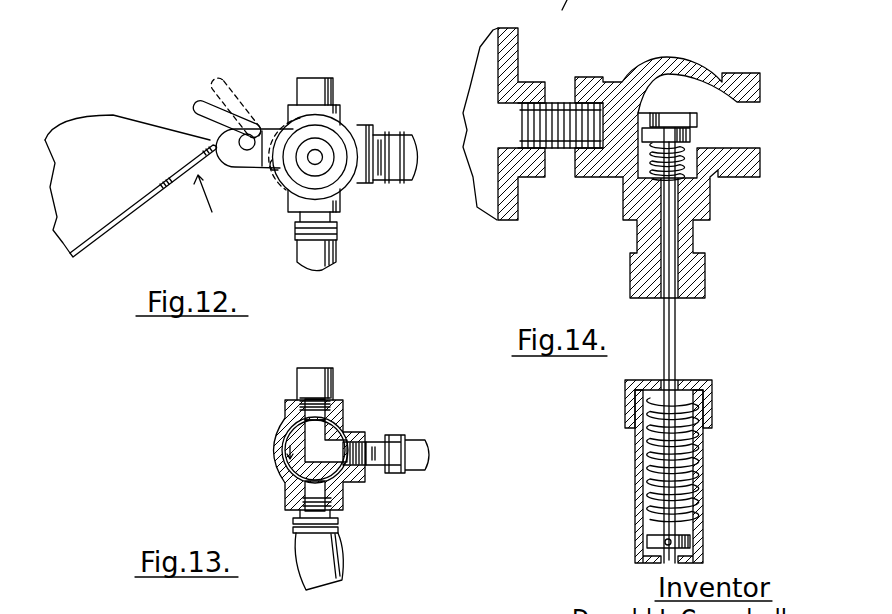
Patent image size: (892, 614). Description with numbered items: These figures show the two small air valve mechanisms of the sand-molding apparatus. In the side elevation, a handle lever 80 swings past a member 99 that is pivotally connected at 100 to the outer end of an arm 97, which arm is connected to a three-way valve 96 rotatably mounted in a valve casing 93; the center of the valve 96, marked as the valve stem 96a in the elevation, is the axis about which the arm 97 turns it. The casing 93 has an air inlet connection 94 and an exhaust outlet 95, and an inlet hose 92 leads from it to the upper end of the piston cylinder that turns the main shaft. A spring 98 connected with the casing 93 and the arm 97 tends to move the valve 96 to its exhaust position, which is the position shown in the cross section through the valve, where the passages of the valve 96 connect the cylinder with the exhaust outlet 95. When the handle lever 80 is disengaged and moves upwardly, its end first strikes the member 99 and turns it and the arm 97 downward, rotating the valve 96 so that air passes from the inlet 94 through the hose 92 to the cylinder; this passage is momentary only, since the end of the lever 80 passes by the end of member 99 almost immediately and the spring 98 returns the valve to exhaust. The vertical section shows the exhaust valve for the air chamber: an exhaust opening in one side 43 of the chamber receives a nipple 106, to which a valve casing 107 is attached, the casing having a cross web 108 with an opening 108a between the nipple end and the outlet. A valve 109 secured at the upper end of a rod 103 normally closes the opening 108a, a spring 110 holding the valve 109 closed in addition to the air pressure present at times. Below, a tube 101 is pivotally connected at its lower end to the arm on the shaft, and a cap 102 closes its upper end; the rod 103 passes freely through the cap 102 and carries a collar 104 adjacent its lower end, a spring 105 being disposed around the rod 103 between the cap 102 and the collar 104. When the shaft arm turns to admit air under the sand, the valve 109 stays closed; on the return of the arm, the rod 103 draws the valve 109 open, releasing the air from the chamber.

In FIG. 14, the upwardly extending sides 43 is at (510, 53).
In FIG. 12, the handle lever 80 is at (144, 183).
In FIG. 12, the inlet hose 92 is at (333, 241).
In FIG. 13, the inlet hose 92 is at (338, 553).
In FIG. 12, the valve casing 93 is at (343, 130).
In FIG. 13, the valve casing 93 is at (338, 422).
In FIG. 12, the air inlet connection 94 is at (406, 140).
In FIG. 13, the air inlet connection 94 is at (398, 441).
In FIG. 12, the exhaust outlet 95 is at (333, 86).
In FIG. 13, the exhaust outlet 95 is at (333, 379).
In FIG. 13, the three-way valve 96 is at (318, 438).
In FIG. 12, the valve stem 96a is at (312, 161).
In FIG. 12, the arm 97 is at (270, 130).
In FIG. 12, the spring 98 is at (310, 125).
In FIG. 12, the member 99 is at (215, 113).
In FIG. 12, the pivotal connection 100 is at (245, 149).
In FIG. 14, the tube 101 is at (705, 472).
In FIG. 14, the cap 102 is at (712, 388).
In FIG. 14, the rod 103 is at (676, 343).
In FIG. 14, the collar 104 is at (690, 543).
In FIG. 14, the spring 105 is at (686, 456).
In FIG. 14, the nipple 106 is at (557, 110).
In FIG. 14, the valve casing 107 is at (636, 74).
In FIG. 14, the cross web 108 is at (706, 123).
In FIG. 14, the opening 108a is at (668, 113).
In FIG. 14, the valve 109 is at (690, 137).
In FIG. 14, the spring 110 is at (651, 157).